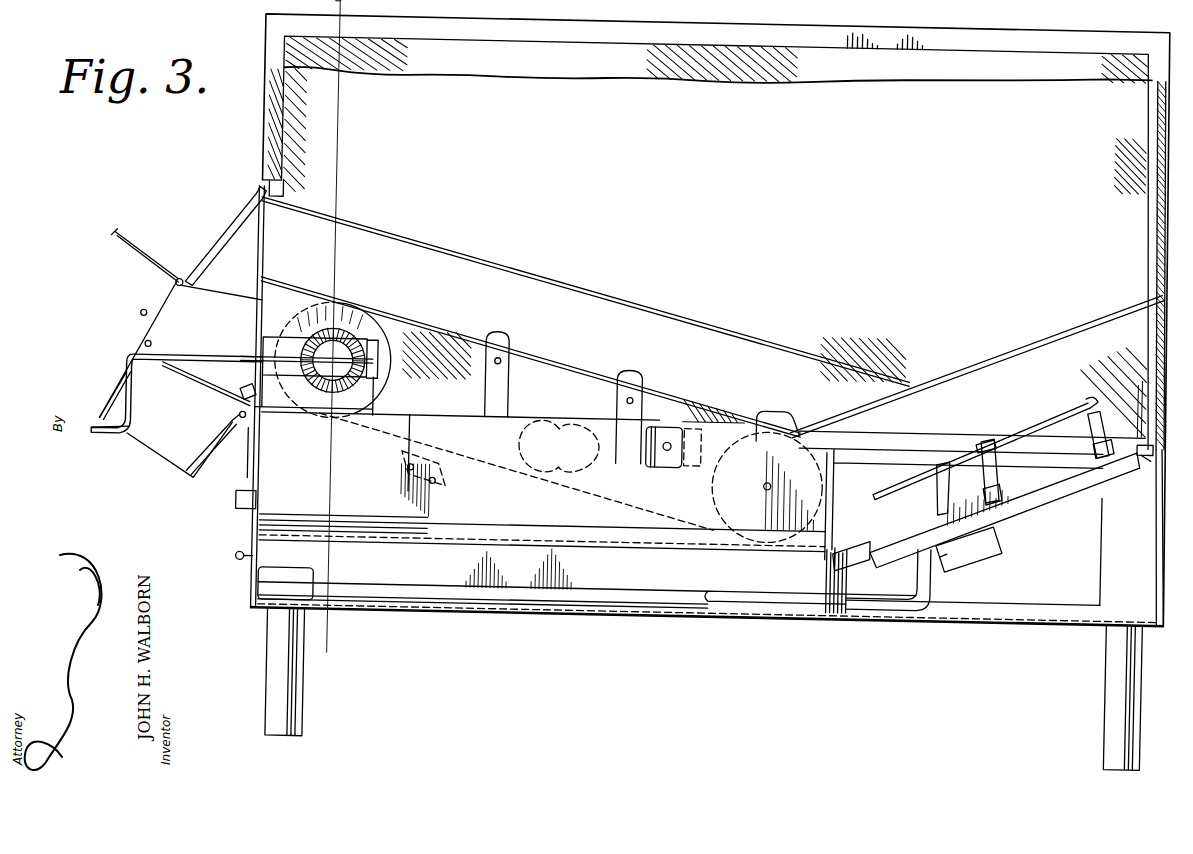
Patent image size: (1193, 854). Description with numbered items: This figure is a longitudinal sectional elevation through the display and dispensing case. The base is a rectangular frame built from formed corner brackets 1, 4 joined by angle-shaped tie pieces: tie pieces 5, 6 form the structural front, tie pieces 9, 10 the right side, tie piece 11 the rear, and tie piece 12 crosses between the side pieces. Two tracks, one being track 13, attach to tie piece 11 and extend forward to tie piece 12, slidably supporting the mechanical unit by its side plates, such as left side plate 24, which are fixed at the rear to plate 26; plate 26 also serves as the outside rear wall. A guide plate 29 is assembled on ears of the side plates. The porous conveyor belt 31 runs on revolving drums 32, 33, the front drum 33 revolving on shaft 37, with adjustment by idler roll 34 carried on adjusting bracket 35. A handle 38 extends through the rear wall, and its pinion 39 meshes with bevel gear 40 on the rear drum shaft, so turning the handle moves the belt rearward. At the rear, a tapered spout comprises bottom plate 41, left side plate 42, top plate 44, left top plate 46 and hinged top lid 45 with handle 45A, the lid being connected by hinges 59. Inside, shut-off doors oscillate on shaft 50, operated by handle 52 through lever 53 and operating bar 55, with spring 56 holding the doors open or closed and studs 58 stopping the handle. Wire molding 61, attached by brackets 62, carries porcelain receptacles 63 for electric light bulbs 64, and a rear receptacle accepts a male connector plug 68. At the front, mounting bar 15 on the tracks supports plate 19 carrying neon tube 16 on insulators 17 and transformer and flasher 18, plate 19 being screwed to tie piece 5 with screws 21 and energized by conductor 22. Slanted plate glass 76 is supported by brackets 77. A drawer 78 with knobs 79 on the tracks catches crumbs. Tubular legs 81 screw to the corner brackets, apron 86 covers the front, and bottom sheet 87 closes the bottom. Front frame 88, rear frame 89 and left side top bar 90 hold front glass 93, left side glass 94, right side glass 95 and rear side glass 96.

The corner bracket 1 is at (1100, 575).
The corner bracket 4 is at (296, 580).
The tie piece 5 is at (1164, 262).
The tie piece 6 is at (1143, 612).
The tie piece 9 is at (915, 446).
The tie piece 10 is at (547, 607).
The tie piece 11 is at (254, 616).
The tie piece 12 is at (836, 613).
The track 13 is at (420, 548).
The mounting bar 15 is at (862, 546).
The neon tube 16 is at (1010, 430).
The insulators 17 is at (1070, 404).
The transformer and flasher 18 is at (992, 547).
The plate 19 is at (1076, 486).
The screws 21 is at (1150, 462).
The conductor 22 is at (938, 588).
The left side plate 24 is at (760, 415).
The plate 26 is at (256, 268).
The guide plate 29 is at (585, 318).
The porous conveyor belt 31 is at (446, 338).
The drum 32 is at (386, 366).
The drum 33 is at (712, 500).
The idler roll 34 is at (404, 444).
The adjusting bracket 35 is at (500, 488).
The shaft 37 is at (766, 488).
The handle 38 is at (114, 445).
The pinion 39 is at (461, 405).
The bevel gear 40 is at (330, 405).
The bottom plate 41 is at (214, 468).
The left side plate 42 is at (179, 449).
The top plate 44 is at (111, 412).
The hinged top lid 45 is at (206, 250).
The handle 45A is at (131, 244).
The left side rigidly attached top plate 46 is at (232, 236).
The shaft 50 is at (182, 382).
The handle 52 is at (138, 332).
The lever 53 is at (238, 419).
The operating bar 55 is at (248, 398).
The spring 56 is at (228, 432).
The studs 58 is at (156, 308).
The hinges 59 is at (176, 289).
The wire molding 61 is at (666, 458).
The brackets 62 is at (767, 487).
The porcelain receptacles 63 is at (642, 468).
The electric light bulbs 64 is at (578, 420).
The male connector plug 68 is at (238, 516).
The slanted plate glass 76 is at (1017, 334).
The brackets 77 is at (803, 425).
The drawer 78 is at (254, 592).
The knobs 79 is at (238, 565).
The tubular legs 81 is at (271, 684).
The apron 86 is at (1158, 515).
The bottom sheet 87 is at (948, 620).
The frame 88 is at (1140, 80).
The frame 89 is at (270, 45).
The left side top bar 90 is at (785, 20).
The front glass 93 is at (1150, 198).
The left side glass 94 is at (842, 91).
The right side glass 95 is at (1100, 165).
The rear side glass 96 is at (266, 112).